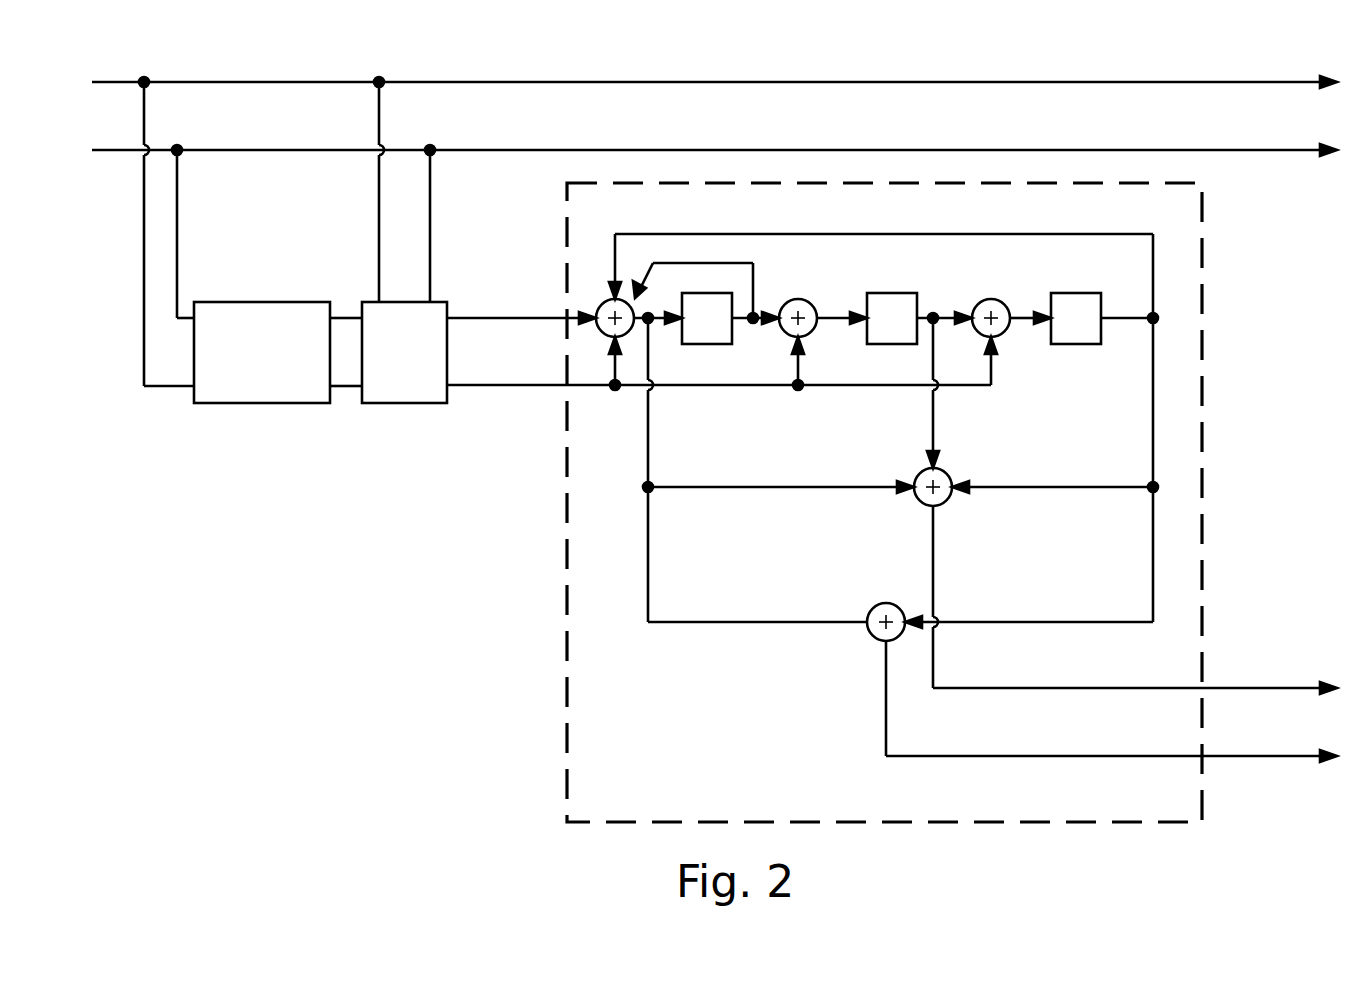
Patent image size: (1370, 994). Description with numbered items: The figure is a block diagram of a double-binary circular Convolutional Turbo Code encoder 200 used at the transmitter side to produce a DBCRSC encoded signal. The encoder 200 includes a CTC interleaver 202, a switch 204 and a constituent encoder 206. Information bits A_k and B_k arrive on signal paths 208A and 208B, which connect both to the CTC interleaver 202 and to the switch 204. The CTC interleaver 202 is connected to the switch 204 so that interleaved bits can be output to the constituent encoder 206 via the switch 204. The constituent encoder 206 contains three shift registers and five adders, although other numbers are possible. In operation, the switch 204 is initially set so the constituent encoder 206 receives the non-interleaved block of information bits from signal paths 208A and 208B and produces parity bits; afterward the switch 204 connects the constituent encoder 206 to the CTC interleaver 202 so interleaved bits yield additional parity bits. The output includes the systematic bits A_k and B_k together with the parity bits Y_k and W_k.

The double-binary circular Convolutional Turbo Code encoder 200 is at (314, 664).
The CTC interleaver 202 is at (264, 301).
The switch 204 is at (374, 301).
The constituent encoder 206 is at (1205, 326).
The signal path 208A is at (336, 81).
The signal path 208B is at (348, 149).